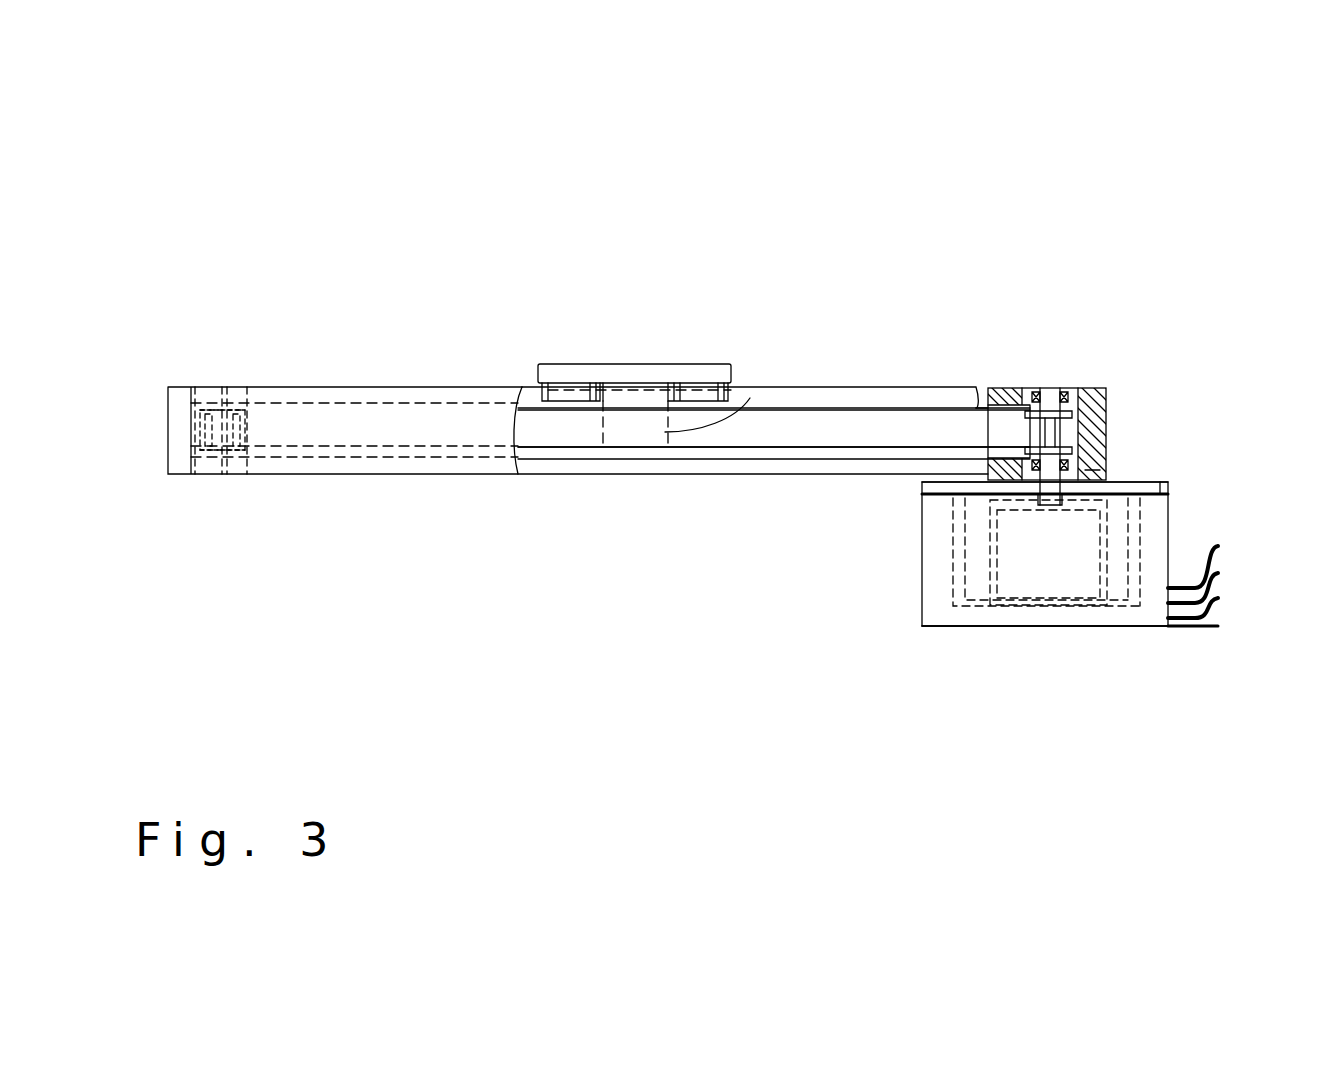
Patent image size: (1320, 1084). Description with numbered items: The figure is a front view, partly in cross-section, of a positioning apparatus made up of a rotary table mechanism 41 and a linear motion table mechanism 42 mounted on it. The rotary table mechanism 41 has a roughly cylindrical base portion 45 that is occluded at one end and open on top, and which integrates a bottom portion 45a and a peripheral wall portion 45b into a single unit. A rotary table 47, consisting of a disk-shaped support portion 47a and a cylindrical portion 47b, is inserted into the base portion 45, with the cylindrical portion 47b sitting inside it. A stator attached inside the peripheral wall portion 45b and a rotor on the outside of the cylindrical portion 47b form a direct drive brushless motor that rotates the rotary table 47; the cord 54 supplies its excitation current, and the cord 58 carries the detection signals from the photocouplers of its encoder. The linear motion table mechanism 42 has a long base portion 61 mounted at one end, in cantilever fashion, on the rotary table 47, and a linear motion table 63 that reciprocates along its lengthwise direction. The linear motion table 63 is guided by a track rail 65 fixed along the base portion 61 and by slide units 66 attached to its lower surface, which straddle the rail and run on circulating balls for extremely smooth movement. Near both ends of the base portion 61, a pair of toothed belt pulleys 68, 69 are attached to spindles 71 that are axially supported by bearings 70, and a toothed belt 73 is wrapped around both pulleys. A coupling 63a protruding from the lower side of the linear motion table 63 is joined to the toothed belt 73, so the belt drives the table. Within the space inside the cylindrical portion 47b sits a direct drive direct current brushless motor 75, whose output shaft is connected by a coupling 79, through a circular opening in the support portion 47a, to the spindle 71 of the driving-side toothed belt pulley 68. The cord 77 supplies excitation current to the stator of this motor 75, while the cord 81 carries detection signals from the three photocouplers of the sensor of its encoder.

The rotary table mechanism 41 is at (900, 665).
The linear motion table mechanism 42 is at (355, 315).
The base portion 45 is at (920, 585).
The bottom portion 45a is at (1010, 615).
The peripheral wall portion 45b is at (1152, 562).
The rotary table 47 is at (955, 520).
The support portion 47a is at (1170, 487).
The cylindrical portion 47b is at (1122, 535).
The cord 54 is at (1218, 546).
The cord 58 is at (1218, 573).
The base portion 61 is at (445, 477).
The linear motion table 63 is at (640, 372).
The coupling 63a is at (750, 398).
The track rail 65 is at (835, 398).
The slide units 66 is at (572, 395).
The toothed belt pulley 68 is at (1010, 390).
The toothed belt pulley 69 is at (265, 387).
The bearings 70 is at (1060, 392).
The spindles 71 is at (225, 387).
The toothed belt 73 is at (585, 432).
The direct current brushless motor 75 is at (1050, 585).
The cord 77 is at (1218, 598).
The coupling 79 is at (1092, 472).
The cord 81 is at (1218, 626).